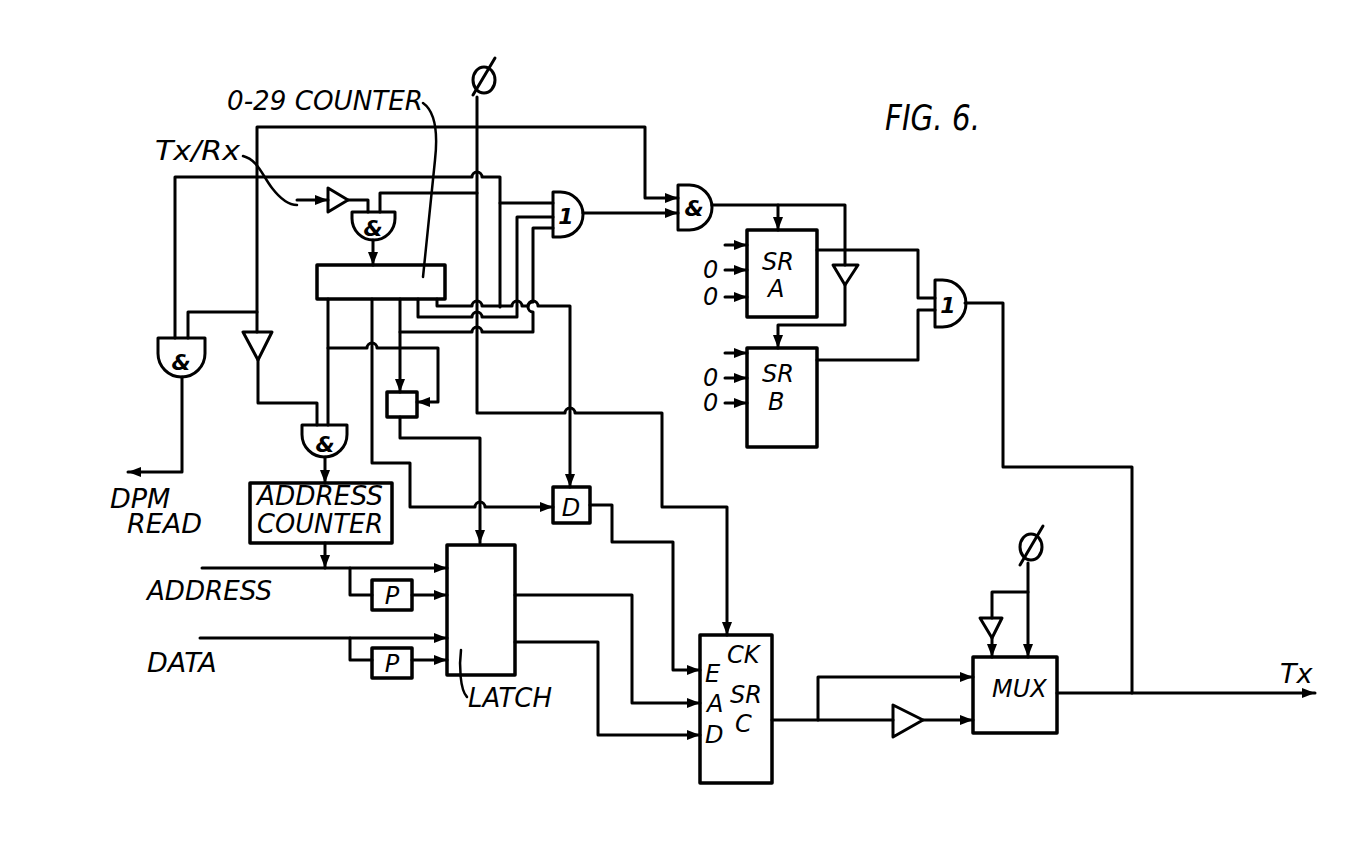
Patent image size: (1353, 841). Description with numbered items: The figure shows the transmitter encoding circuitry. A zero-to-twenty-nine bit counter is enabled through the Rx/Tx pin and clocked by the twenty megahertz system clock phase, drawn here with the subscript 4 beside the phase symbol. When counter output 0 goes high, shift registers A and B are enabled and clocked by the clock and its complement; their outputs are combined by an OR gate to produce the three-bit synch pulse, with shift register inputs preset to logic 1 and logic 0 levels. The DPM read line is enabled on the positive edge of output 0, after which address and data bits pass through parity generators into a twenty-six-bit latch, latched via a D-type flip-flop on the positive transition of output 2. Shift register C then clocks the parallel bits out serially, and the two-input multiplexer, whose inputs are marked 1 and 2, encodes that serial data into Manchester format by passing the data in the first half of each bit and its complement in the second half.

The clock phase phi- 4 is at (763, 357).
The logic one input 1 is at (847, 475).
The output '0' of the 0-29 bit counter 0 is at (725, 336).
The output '2' of the 0-29 bit counter 2 is at (881, 720).